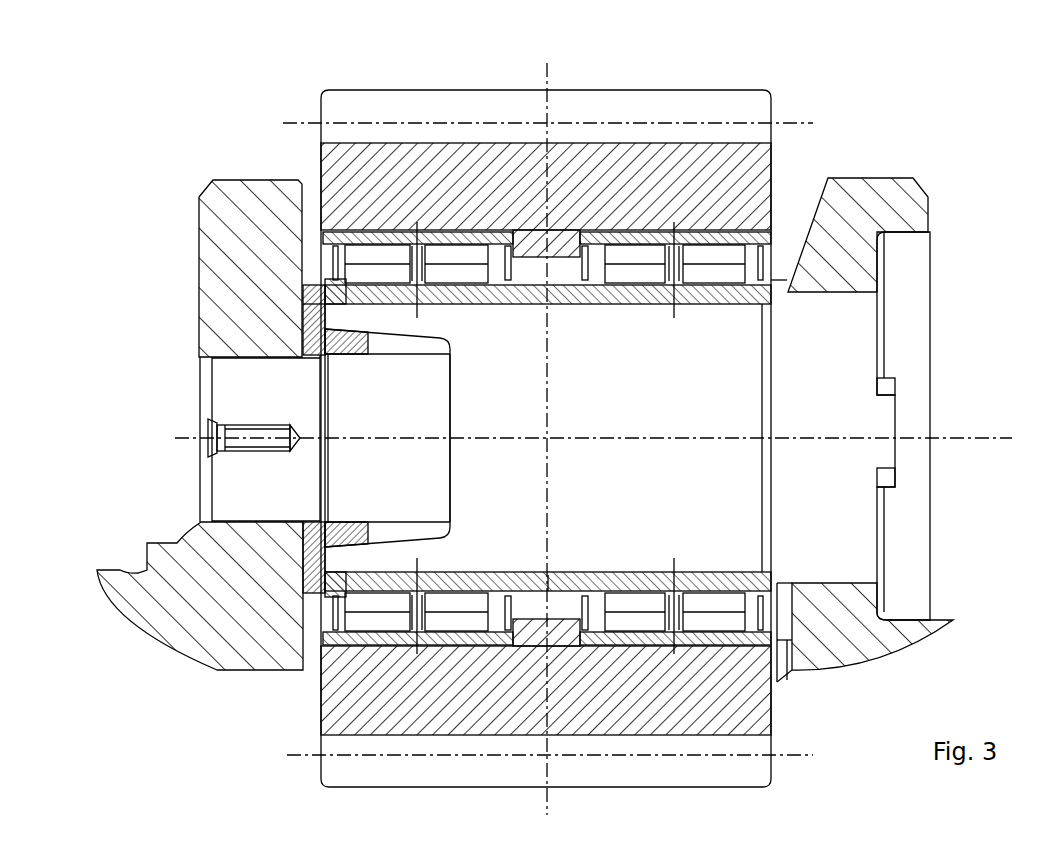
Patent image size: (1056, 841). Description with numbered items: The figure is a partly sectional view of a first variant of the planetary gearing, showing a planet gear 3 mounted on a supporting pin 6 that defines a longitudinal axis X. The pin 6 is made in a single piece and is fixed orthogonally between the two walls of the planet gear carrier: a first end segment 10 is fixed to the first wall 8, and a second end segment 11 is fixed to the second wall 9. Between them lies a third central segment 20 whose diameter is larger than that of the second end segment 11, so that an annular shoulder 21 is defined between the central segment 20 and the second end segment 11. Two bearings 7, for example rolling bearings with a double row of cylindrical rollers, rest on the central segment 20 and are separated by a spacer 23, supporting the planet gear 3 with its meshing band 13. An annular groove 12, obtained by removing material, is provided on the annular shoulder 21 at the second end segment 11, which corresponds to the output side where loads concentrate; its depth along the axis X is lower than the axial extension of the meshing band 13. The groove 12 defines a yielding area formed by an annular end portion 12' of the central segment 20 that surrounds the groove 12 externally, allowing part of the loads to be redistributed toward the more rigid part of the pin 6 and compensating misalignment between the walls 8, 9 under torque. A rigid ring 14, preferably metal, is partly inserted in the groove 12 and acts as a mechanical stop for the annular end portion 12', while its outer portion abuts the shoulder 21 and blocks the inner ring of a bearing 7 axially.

The planet gear 3 is at (815, 88).
The supporting pin 6 is at (840, 377).
The bearing 7 is at (348, 240).
The first wall 8 is at (900, 198).
The second wall 9 is at (243, 233).
The first end segment 10 is at (850, 340).
The second end segment 11 is at (232, 377).
The annular groove 12 is at (469, 389).
The annular end portion 12' is at (287, 416).
The meshing band 13 is at (690, 105).
The rigid ring 14 is at (325, 343).
The third central segment 20 is at (715, 483).
The annular shoulder 21 is at (323, 316).
The spacer 23 is at (555, 587).
The longitudinal axis X is at (970, 443).